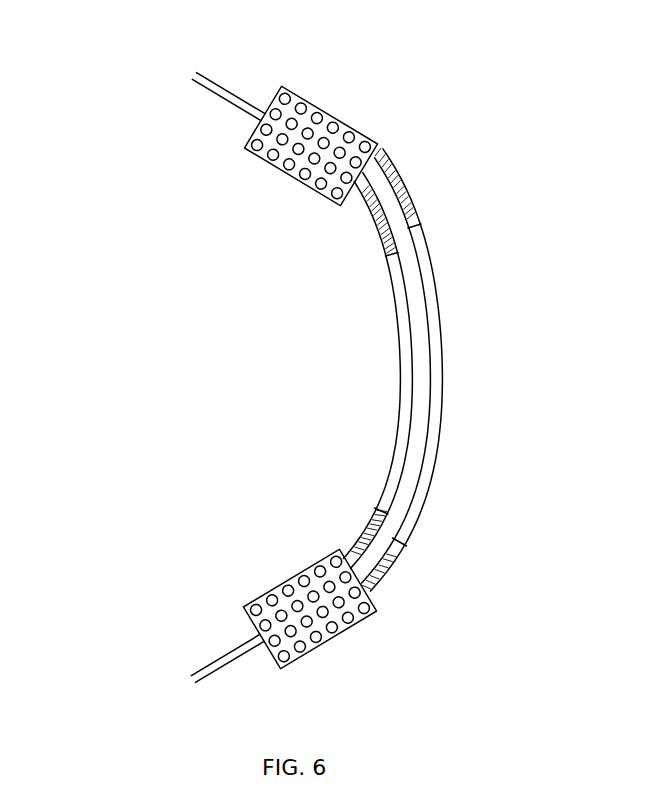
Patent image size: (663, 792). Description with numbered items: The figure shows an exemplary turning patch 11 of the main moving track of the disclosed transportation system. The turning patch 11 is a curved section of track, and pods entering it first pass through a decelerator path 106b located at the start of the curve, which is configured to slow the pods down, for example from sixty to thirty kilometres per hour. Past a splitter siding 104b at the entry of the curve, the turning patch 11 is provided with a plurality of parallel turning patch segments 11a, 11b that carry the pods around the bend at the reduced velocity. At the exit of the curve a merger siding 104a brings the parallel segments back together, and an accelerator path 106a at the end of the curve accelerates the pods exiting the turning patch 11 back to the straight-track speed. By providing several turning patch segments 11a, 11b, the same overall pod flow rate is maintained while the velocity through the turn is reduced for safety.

The turning patch 11 is at (127, 68).
The turning patch segment 11a is at (407, 308).
The turning patch segment 11b is at (445, 368).
The merger siding 104a is at (325, 110).
The splitter siding 104b is at (337, 630).
The accelerator path 106a is at (362, 215).
The decelerator path 106b is at (400, 550).